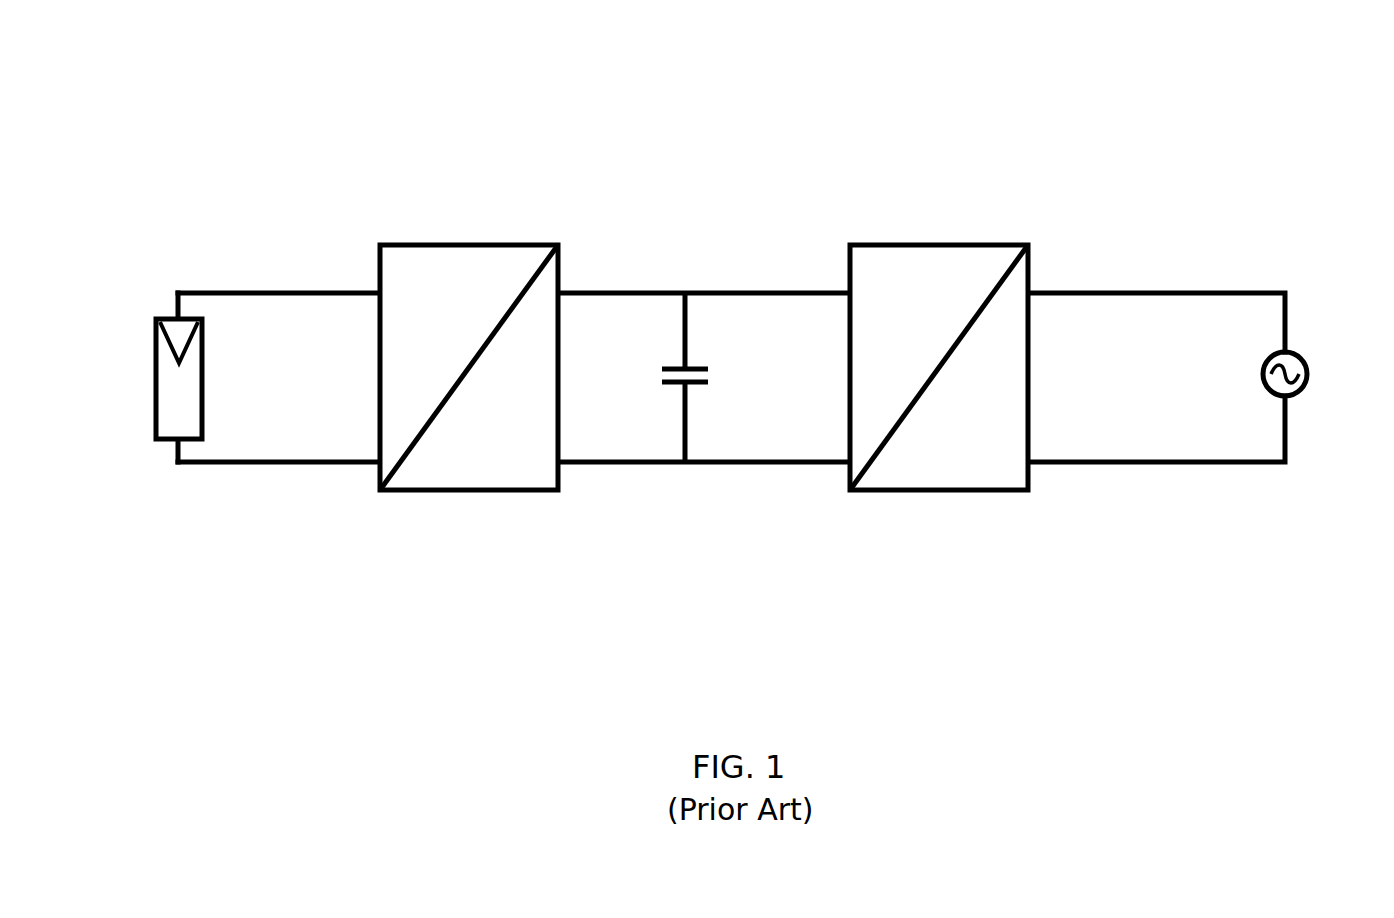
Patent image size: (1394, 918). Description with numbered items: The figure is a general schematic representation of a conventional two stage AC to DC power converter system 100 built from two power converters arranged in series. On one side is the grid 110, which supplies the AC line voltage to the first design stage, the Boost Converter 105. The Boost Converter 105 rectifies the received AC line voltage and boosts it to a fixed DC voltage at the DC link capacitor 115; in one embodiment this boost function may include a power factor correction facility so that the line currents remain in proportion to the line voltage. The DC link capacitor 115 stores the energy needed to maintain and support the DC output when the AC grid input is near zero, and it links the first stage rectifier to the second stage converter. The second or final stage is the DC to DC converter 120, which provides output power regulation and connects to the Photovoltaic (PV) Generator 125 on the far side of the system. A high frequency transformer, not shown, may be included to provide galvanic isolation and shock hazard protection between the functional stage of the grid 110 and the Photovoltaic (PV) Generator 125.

The AC to DC power converter system 100 is at (1117, 137).
The Boost Converter 105 is at (930, 223).
The grid 110 is at (1326, 371).
The DC link capacitor 115 is at (648, 381).
The DC to DC converter 120 is at (487, 223).
The Photovoltaic (PV) Generator 125 is at (138, 381).